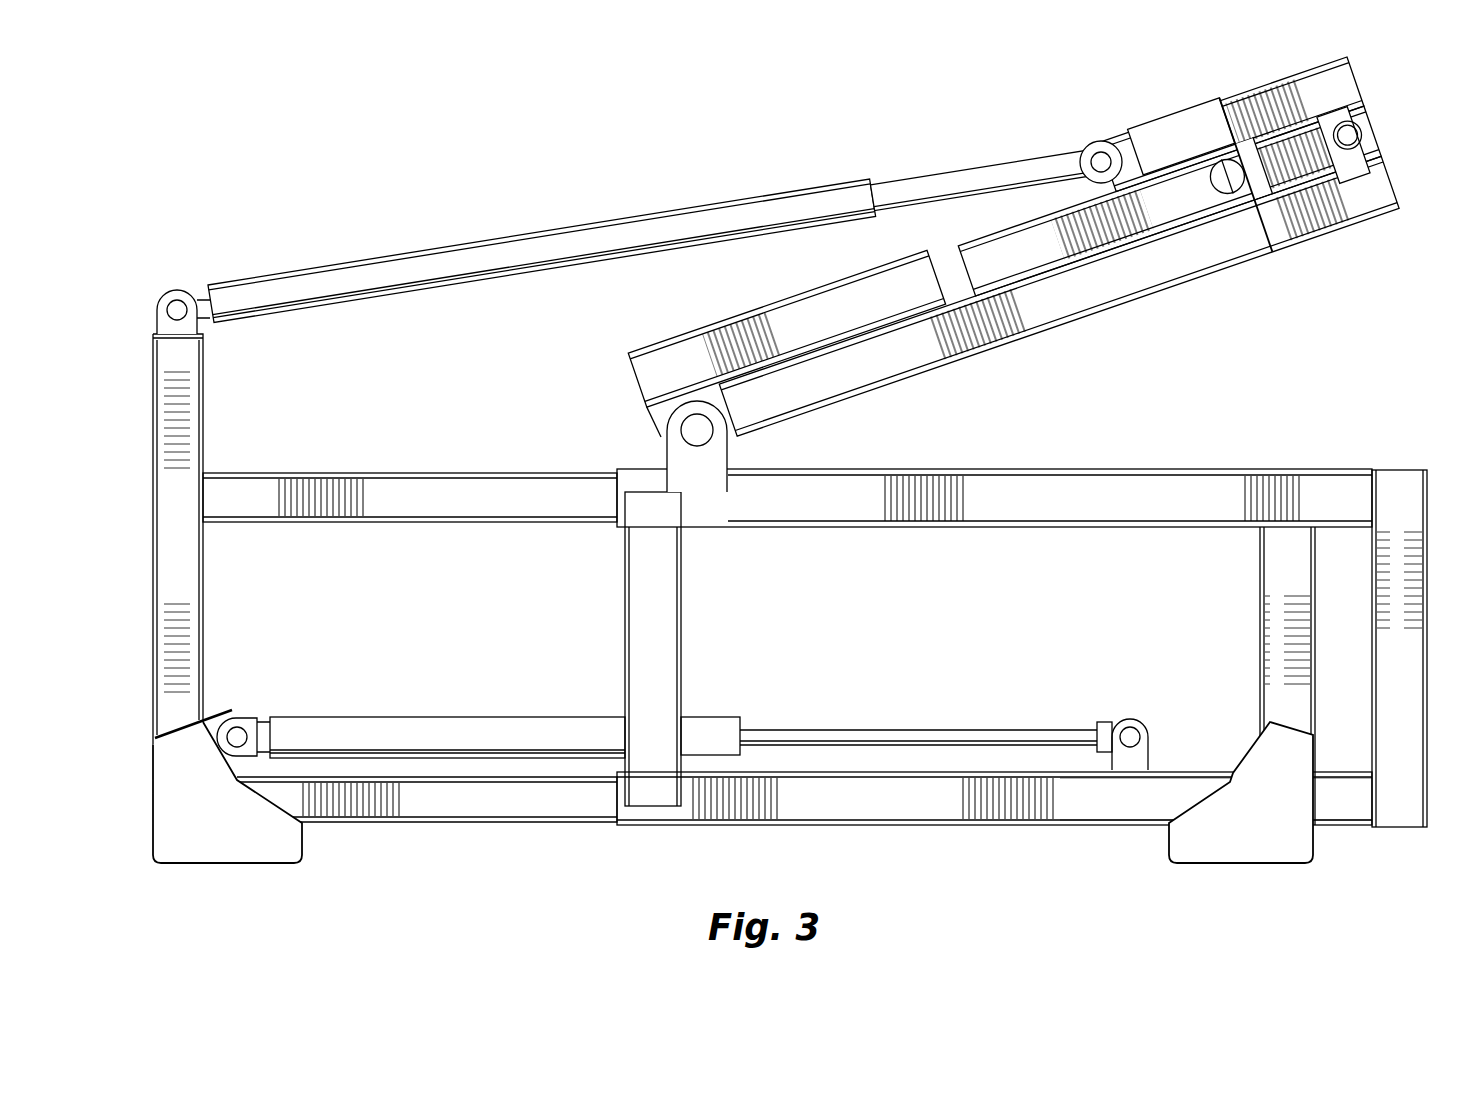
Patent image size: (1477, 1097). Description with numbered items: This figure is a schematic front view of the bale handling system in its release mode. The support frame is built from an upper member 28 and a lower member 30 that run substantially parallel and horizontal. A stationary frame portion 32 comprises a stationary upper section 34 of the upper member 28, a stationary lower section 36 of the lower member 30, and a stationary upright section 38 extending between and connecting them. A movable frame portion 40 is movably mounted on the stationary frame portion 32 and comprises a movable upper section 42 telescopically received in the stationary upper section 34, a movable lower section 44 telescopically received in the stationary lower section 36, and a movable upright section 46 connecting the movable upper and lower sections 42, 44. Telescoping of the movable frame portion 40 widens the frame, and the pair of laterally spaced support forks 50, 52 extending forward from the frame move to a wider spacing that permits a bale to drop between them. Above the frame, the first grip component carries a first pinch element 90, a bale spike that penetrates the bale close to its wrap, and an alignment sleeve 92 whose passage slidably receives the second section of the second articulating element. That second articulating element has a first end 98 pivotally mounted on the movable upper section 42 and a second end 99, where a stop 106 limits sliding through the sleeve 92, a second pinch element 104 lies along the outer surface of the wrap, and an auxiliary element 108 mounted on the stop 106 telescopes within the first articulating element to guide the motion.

The upper member 28 is at (985, 535).
The lower member 30 is at (918, 838).
The stationary frame portion 32 is at (1388, 838).
The stationary upper section 34 is at (1100, 498).
The stationary lower section 36 is at (1103, 805).
The stationary upright section 38 is at (1403, 680).
The movable frame portion 40 is at (410, 838).
The movable upper section 42 is at (465, 478).
The movable lower section 44 is at (583, 805).
The movable upright section 46 is at (185, 575).
The support fork 50 is at (225, 872).
The support fork 52 is at (1228, 872).
The first pinch element 90 is at (1222, 192).
The alignment sleeve 92 is at (1180, 108).
The first end 98 is at (248, 292).
The second end 99 is at (1318, 83).
The second pinch element 104 is at (1363, 130).
The stop 106 is at (1370, 148).
The auxiliary element 108 is at (1348, 205).